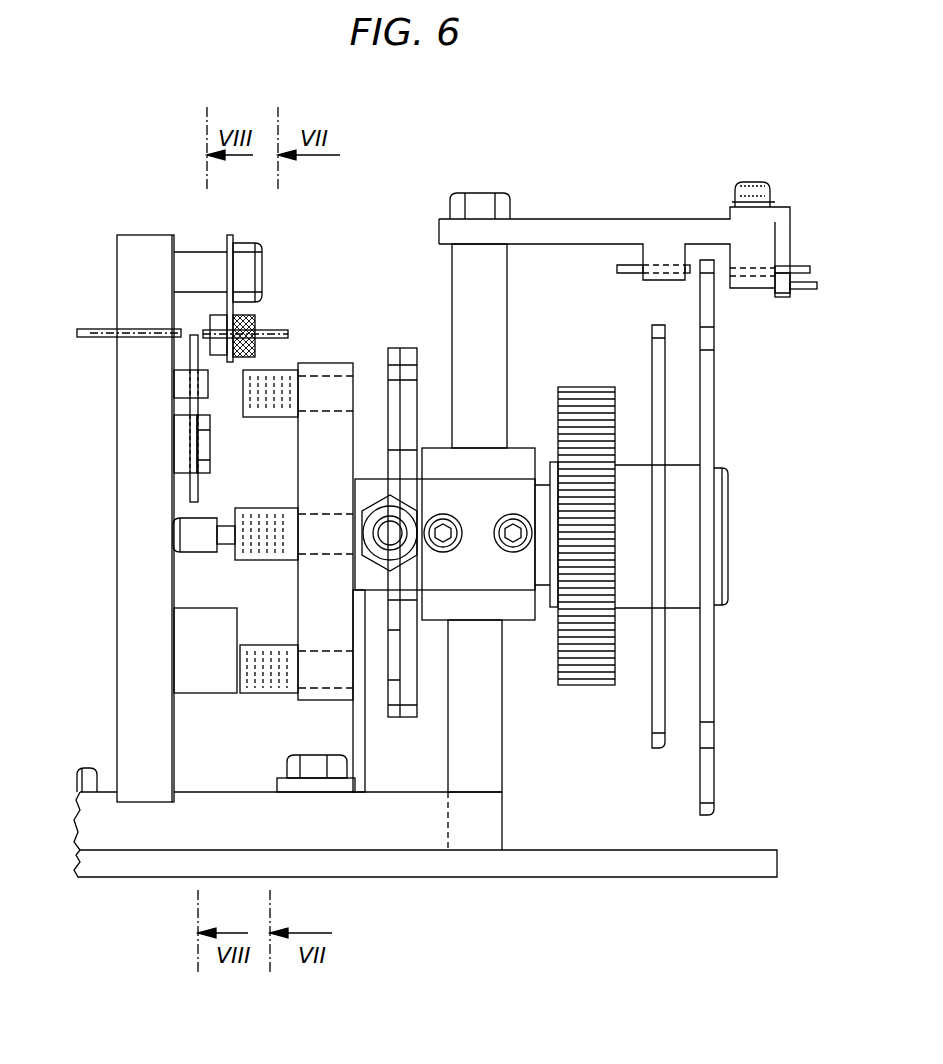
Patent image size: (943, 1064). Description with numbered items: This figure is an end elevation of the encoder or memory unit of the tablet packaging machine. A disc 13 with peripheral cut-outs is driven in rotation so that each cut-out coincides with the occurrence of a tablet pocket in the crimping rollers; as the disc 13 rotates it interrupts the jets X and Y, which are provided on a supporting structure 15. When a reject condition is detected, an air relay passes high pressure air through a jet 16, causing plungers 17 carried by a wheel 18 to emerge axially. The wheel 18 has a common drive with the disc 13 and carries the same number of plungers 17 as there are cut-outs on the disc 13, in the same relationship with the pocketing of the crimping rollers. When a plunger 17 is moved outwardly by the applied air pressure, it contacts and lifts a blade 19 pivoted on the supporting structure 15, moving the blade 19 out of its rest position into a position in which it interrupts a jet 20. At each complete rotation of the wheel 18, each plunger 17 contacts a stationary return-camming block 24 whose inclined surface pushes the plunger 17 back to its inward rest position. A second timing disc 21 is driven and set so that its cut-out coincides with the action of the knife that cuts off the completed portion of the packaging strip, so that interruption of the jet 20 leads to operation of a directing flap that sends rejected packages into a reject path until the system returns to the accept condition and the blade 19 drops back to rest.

The disc 13 is at (712, 367).
The supporting structure 15 is at (643, 229).
The jet 16 is at (392, 532).
The plungers 17 is at (205, 526).
The wheel 18 is at (320, 362).
The blade 19 is at (194, 412).
The jet 20 is at (87, 327).
The second timing disc 21 is at (410, 387).
The return-camming block 24 is at (207, 674).
The jet X is at (800, 266).
The jet Y is at (806, 294).